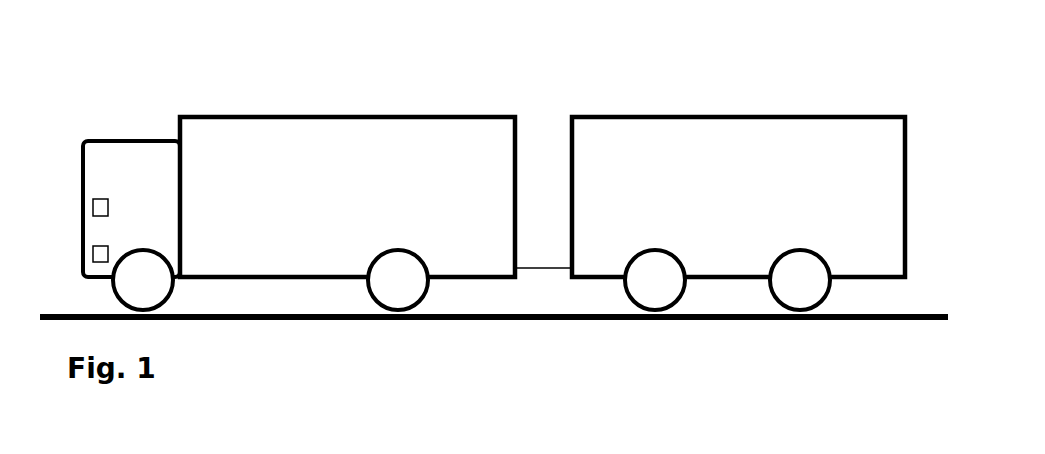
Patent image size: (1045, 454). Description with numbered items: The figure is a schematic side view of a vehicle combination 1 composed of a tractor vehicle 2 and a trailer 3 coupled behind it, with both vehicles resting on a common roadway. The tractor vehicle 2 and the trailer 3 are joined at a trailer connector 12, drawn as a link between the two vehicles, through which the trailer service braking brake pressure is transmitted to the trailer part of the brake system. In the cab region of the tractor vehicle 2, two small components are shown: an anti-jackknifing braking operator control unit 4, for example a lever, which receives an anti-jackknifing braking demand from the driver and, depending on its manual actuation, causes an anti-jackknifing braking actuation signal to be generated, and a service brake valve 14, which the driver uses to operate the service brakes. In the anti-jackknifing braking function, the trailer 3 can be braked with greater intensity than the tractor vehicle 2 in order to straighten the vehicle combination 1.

The vehicle combination 1 is at (150, 88).
The tractor vehicle 2 is at (317, 115).
The trailer 3 is at (682, 115).
The anti-jackknifing braking operator control unit 4 is at (110, 207).
The trailer connector 12 is at (540, 266).
The service brake valve 14 is at (93, 254).